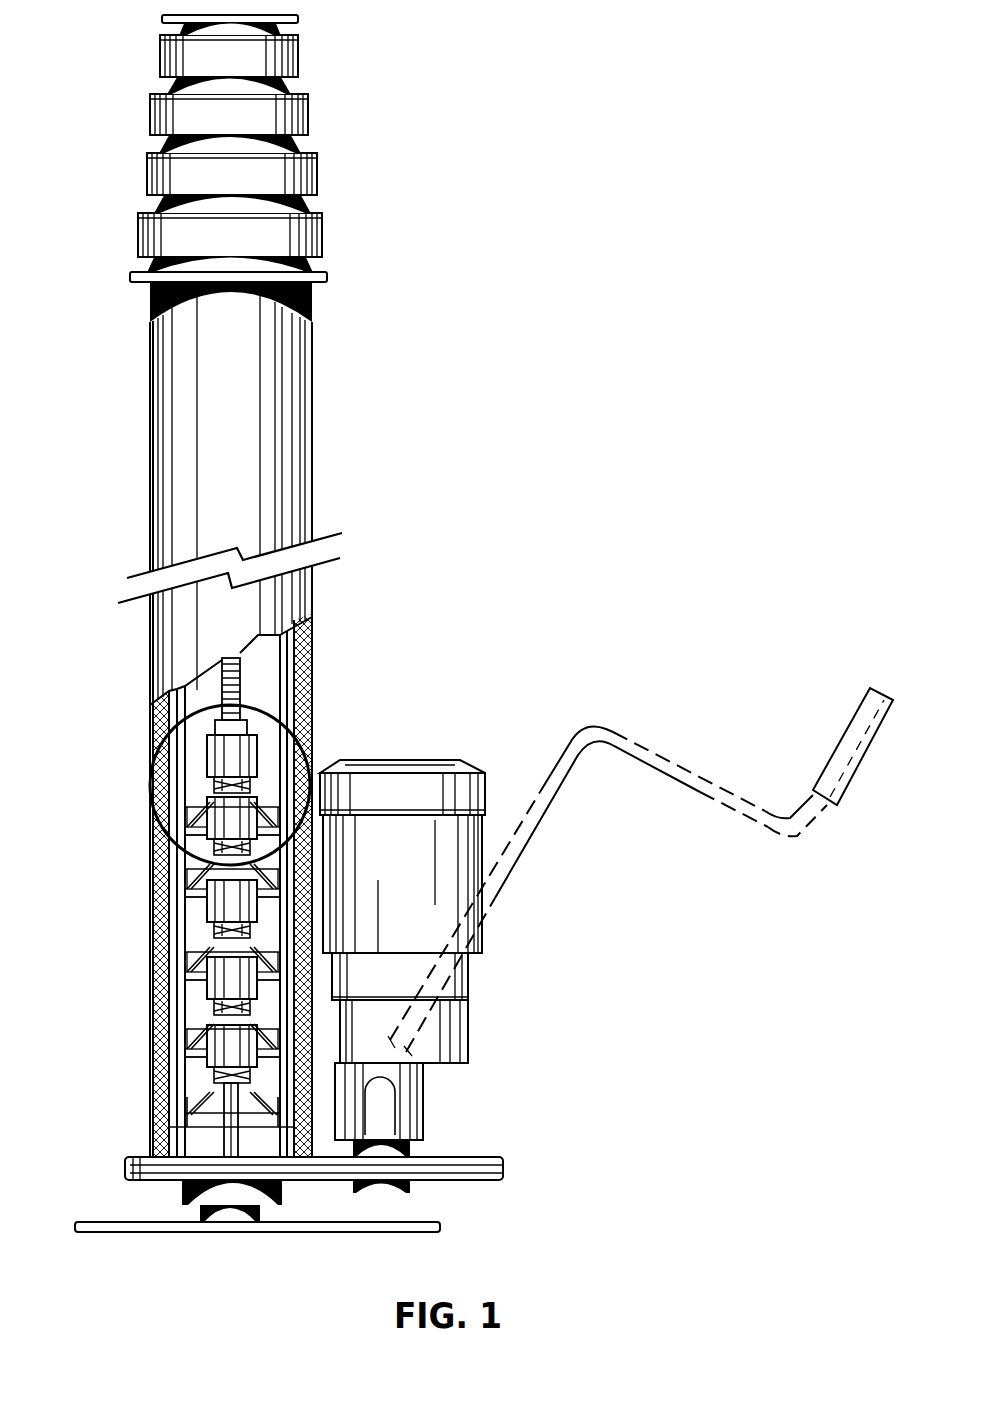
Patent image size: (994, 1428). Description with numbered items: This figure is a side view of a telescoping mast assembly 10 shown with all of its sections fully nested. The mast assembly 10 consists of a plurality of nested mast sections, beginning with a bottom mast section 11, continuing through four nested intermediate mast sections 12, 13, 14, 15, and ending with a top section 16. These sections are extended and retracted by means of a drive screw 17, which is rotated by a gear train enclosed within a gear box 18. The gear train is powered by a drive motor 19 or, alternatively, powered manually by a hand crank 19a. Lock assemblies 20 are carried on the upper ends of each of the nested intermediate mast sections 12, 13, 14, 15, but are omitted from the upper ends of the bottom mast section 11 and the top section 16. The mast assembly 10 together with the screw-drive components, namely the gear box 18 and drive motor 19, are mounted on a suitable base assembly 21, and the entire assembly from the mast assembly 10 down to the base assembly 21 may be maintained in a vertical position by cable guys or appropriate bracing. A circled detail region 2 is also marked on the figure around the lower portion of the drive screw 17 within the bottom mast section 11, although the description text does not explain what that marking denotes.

The detail circle of pump stage 2 is at (288, 730).
The telescoping mast assembly 10 is at (302, 719).
The bottom mast section 11 is at (310, 332).
The intermediate mast section 12 is at (297, 267).
The intermediate mast section 13 is at (292, 207).
The intermediate mast section 14 is at (292, 143).
The intermediate mast section 15 is at (280, 87).
The top mast section 16 is at (277, 28).
The drive screw 17 is at (224, 683).
The gear box 18 is at (468, 1155).
The drive motor 19 is at (386, 882).
The hand crank 19a is at (523, 832).
The lock assemblies 20 is at (158, 62).
The base assembly 21 is at (230, 1212).